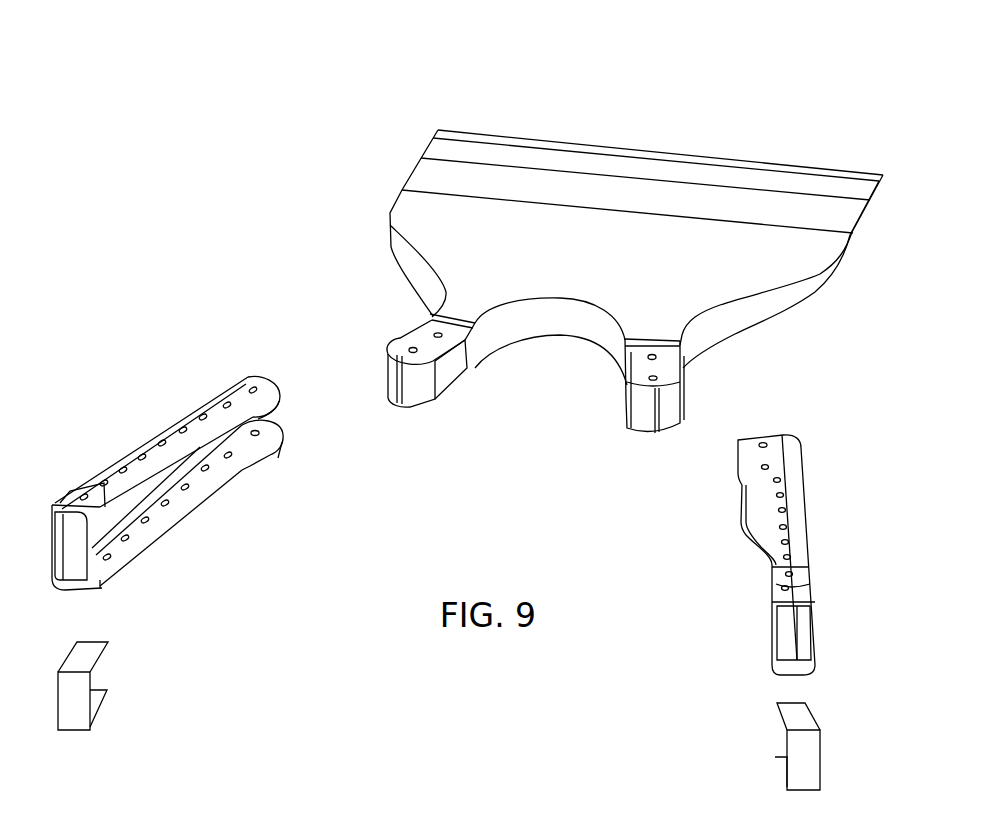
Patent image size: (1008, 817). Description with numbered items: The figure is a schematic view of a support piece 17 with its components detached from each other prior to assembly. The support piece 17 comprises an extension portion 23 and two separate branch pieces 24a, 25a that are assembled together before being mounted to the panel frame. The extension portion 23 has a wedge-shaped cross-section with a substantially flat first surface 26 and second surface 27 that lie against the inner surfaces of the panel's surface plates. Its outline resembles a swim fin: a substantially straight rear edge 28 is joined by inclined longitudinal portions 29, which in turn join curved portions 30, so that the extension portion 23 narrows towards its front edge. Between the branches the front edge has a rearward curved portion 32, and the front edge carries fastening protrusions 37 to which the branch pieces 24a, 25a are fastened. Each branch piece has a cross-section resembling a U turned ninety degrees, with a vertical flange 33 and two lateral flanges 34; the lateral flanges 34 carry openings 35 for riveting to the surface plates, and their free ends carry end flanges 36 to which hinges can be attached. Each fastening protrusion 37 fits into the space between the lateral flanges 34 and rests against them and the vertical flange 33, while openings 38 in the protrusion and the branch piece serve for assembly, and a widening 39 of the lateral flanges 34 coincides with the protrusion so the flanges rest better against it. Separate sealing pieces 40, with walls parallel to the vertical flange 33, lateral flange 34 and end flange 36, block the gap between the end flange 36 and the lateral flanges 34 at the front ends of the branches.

The support piece 17 is at (607, 98).
The extension portion 23 is at (586, 265).
The branch piece 24a is at (142, 385).
The branch piece 25a is at (823, 518).
The first surface 26 is at (750, 245).
The second surface 27 is at (813, 308).
The rear edge 28 is at (702, 153).
The longitudinal portion 29 is at (400, 193).
The curved portion 30 is at (412, 267).
The rearward curved portion 32 is at (575, 317).
The vertical flange 33 is at (107, 518).
The lateral flange 34 is at (133, 463).
The opening 35 is at (165, 503).
The end flange 36 is at (63, 560).
The fastening protrusion 37 is at (418, 332).
The opening 38 is at (412, 350).
The widening 39 is at (267, 390).
The sealing piece 40 is at (134, 692).